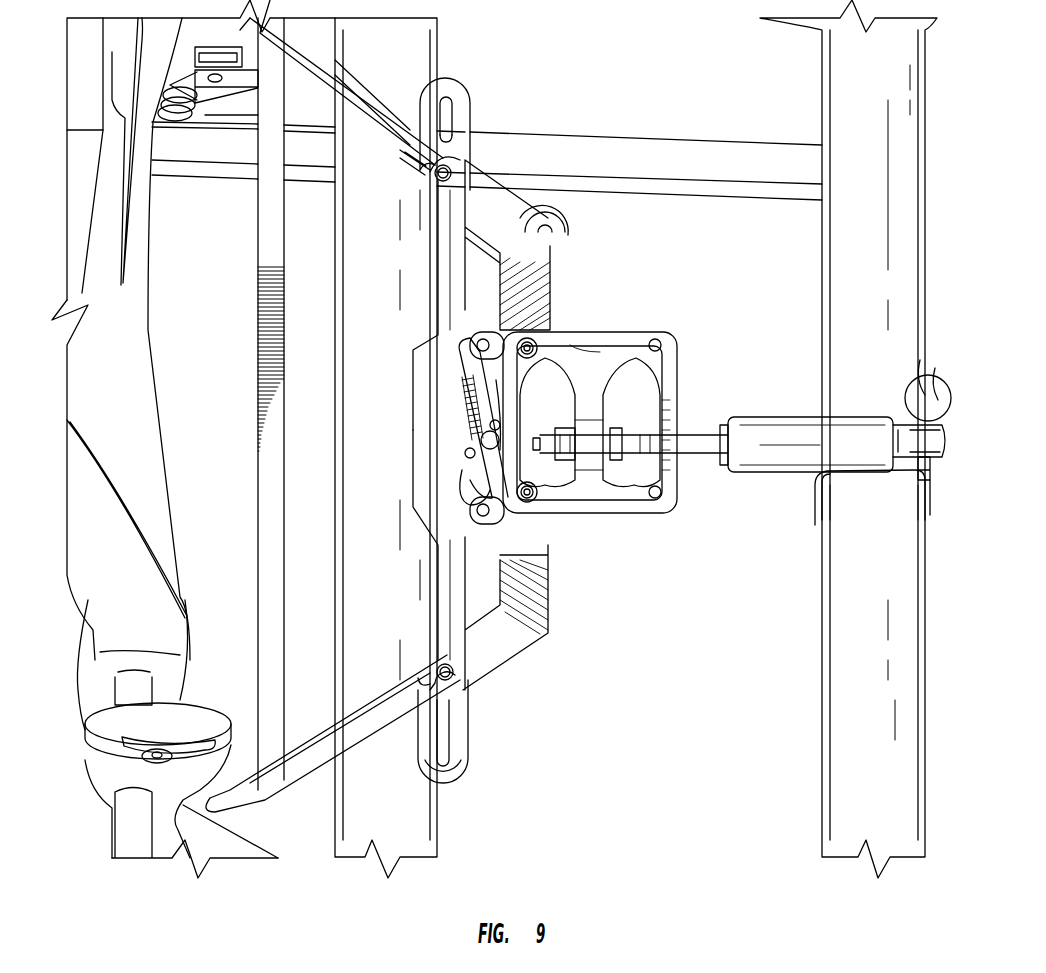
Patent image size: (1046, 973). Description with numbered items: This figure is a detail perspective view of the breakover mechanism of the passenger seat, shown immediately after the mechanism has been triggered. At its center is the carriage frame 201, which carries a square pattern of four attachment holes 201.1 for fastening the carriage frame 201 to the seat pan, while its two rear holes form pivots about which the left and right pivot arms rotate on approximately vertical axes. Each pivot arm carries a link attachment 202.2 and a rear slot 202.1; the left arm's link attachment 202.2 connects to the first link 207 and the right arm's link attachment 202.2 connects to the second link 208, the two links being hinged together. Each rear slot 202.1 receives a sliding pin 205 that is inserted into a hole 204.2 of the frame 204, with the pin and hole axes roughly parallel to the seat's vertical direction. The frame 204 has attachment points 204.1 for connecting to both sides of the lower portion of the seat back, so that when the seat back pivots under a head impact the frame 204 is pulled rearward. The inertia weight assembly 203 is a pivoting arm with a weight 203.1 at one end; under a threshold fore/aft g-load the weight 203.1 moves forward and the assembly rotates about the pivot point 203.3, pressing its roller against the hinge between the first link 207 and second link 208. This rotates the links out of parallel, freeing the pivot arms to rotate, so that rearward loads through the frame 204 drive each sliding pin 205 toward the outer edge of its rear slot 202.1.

The carriage frame 201 is at (635, 340).
The attachment holes 201.1 is at (665, 494).
The rear slot 202.1 is at (450, 110).
The link attachment 202.2 is at (492, 335).
The inertia weight assembly 203 is at (470, 420).
The weight 203.1 is at (570, 228).
The pivot point 203.3 is at (470, 380).
The frame 204 is at (262, 322).
The attachment points 204.1 is at (250, 803).
The hole 204.2 is at (448, 172).
The sliding pin 205 is at (440, 170).
The first link 207 is at (340, 330).
The second link 208 is at (472, 476).